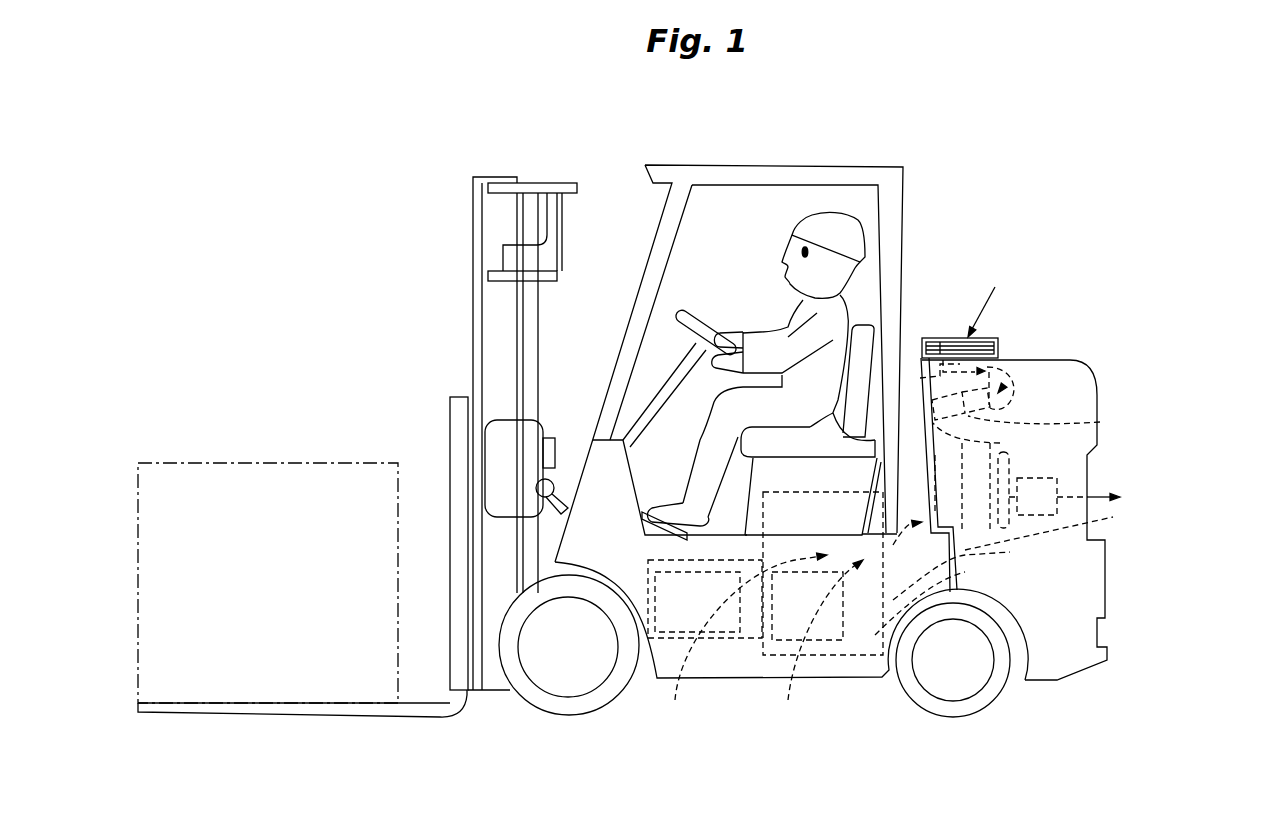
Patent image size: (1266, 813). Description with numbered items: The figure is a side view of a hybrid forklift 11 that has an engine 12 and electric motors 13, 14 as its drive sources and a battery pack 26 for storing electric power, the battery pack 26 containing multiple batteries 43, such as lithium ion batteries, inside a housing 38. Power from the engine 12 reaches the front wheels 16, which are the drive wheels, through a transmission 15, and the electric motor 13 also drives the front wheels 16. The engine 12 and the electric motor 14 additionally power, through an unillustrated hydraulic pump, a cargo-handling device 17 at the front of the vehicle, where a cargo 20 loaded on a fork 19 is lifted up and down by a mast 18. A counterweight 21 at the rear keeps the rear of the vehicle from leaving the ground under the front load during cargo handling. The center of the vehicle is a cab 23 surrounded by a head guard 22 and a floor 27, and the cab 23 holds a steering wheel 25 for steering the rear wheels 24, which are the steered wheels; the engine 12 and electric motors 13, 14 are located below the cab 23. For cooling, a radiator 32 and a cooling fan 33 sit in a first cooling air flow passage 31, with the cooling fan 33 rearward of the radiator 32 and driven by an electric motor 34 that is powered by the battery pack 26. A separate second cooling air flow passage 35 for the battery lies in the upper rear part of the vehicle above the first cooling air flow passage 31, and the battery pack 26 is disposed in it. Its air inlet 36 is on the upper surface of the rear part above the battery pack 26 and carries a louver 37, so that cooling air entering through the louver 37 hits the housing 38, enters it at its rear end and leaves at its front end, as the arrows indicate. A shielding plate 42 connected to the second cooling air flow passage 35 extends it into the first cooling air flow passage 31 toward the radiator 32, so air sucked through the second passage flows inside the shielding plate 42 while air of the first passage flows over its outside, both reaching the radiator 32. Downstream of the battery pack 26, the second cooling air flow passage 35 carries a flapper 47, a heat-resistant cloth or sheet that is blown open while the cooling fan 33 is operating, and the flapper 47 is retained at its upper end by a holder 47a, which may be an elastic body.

The hybrid forklift 11 is at (418, 196).
The engine 12 is at (885, 655).
The electric motor 13 is at (740, 607).
The electric motor 14 is at (827, 643).
The transmission 15 is at (713, 638).
The front wheels 16 is at (538, 702).
The cargo-handling device 17 is at (512, 177).
The mast 18 is at (476, 333).
The fork 19 is at (343, 708).
The cargo 20 is at (270, 462).
The counterweight 21 is at (1075, 382).
The head guard 22 is at (782, 165).
The cab 23 is at (733, 218).
The rear wheels 24 is at (987, 697).
The steering wheel 25 is at (688, 310).
The battery pack 26 is at (1010, 417).
The floor 27 is at (725, 535).
The first cooling air flow passage 31 is at (965, 572).
The radiator 32 is at (1010, 552).
The cooling fan 33 is at (1007, 457).
The electric motor 34 is at (1057, 513).
The second cooling air flow passage 35 is at (1008, 411).
The air inlet 36 is at (1000, 352).
The louver 37 is at (998, 338).
The housing 38 is at (948, 392).
The shielding plate 42 is at (880, 470).
The batteries 43 is at (1000, 443).
The flapper 47 is at (895, 470).
The holder 47a is at (905, 470).